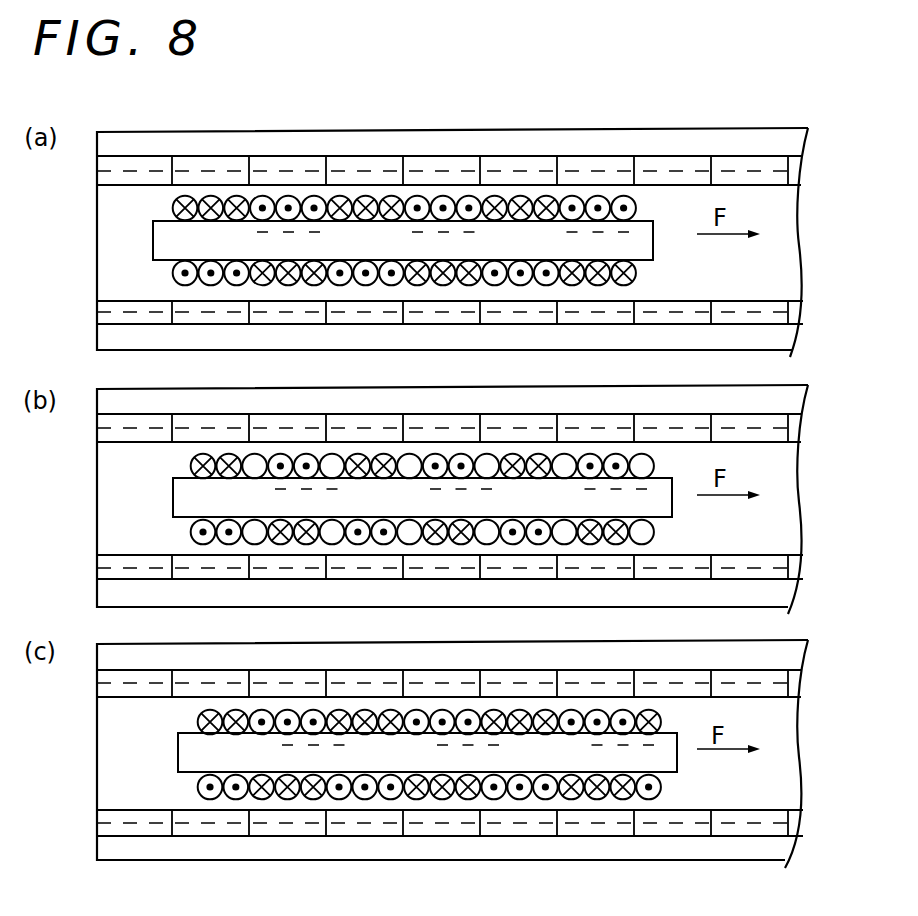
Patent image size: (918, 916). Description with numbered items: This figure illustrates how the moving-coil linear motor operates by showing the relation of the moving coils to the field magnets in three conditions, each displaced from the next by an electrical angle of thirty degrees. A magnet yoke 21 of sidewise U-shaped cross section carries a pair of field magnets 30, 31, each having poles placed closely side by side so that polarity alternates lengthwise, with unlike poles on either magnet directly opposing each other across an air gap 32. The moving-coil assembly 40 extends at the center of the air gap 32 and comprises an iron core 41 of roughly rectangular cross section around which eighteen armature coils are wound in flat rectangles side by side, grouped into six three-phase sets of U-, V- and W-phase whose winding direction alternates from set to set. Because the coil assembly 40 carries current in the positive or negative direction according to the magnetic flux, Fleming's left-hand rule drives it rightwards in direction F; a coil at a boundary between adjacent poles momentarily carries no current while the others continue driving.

The magnet yoke 21 is at (493, 145).
The field magnet 30 is at (778, 170).
The field magnet 31 is at (780, 315).
The air gap 32 is at (120, 246).
The moving-coil assembly 40 is at (640, 190).
The iron core 41 is at (643, 235).